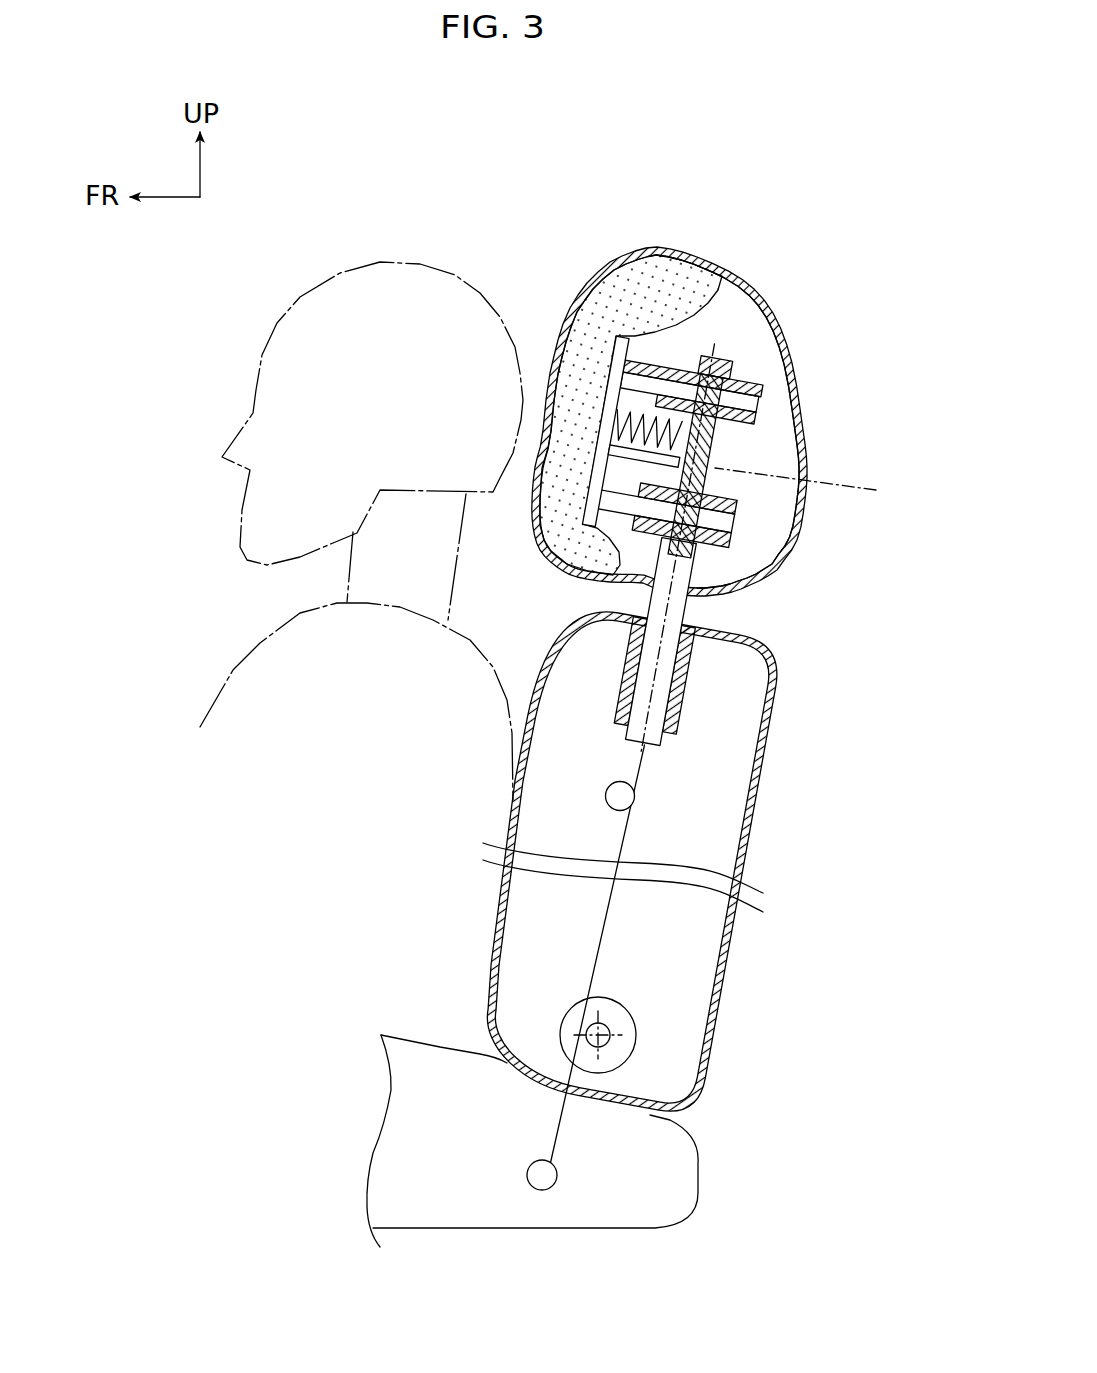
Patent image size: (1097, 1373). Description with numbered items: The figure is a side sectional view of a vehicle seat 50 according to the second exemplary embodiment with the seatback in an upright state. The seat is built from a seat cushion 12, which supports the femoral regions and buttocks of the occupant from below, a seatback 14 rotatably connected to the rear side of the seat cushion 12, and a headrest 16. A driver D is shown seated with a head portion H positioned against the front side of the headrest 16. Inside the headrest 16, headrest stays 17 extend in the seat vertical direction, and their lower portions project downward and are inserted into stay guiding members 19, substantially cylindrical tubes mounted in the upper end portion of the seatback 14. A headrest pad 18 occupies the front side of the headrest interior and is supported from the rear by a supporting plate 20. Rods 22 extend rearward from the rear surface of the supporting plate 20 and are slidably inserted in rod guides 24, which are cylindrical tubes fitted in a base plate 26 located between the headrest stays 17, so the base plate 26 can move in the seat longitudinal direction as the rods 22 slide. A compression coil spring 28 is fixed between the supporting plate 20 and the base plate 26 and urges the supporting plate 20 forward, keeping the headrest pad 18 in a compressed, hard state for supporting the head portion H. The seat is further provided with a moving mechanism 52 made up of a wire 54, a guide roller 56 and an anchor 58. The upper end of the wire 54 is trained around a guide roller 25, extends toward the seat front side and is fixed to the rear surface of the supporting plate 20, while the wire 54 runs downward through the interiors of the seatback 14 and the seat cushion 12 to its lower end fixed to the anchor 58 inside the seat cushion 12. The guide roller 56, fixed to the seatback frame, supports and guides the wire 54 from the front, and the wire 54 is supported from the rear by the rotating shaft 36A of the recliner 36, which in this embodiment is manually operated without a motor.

The seat cushion 12 is at (447, 1233).
The seatback 14 is at (766, 744).
The headrest 16 is at (797, 346).
The headrest stays 17 is at (687, 615).
The headrest pad 18 is at (720, 292).
The stay guiding members 19 is at (627, 680).
The supporting plate 20 is at (577, 343).
The rods 22 is at (659, 370).
The rod guide 24 is at (762, 402).
The guide roller 25 is at (813, 487).
The base plate 26 is at (718, 452).
The compression coil spring 28 is at (675, 383).
The recliner 36 is at (641, 1036).
The rotating shaft 36A is at (606, 1043).
The vehicle seat 50 is at (478, 242).
The moving mechanism 52 is at (607, 1023).
The wire 54 is at (617, 906).
The guide roller 56 is at (605, 800).
The anchor 58 is at (541, 1190).
The head portion H is at (387, 260).
The driver D is at (218, 681).